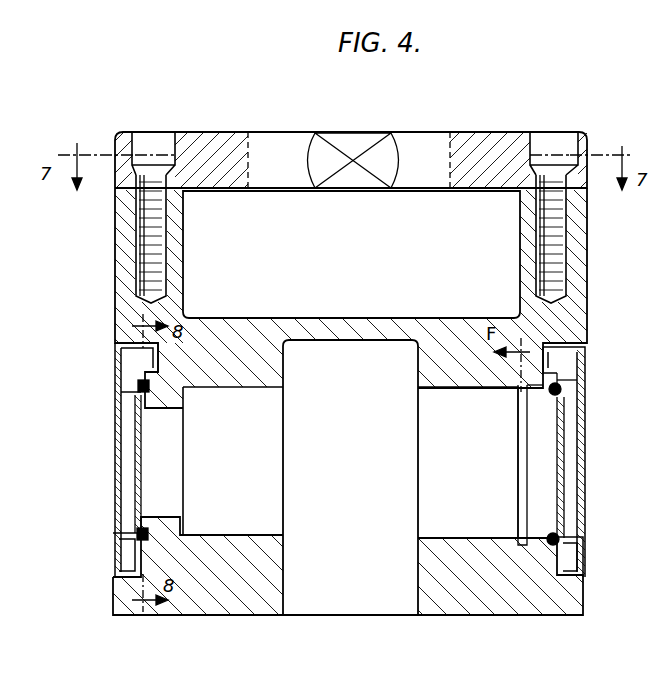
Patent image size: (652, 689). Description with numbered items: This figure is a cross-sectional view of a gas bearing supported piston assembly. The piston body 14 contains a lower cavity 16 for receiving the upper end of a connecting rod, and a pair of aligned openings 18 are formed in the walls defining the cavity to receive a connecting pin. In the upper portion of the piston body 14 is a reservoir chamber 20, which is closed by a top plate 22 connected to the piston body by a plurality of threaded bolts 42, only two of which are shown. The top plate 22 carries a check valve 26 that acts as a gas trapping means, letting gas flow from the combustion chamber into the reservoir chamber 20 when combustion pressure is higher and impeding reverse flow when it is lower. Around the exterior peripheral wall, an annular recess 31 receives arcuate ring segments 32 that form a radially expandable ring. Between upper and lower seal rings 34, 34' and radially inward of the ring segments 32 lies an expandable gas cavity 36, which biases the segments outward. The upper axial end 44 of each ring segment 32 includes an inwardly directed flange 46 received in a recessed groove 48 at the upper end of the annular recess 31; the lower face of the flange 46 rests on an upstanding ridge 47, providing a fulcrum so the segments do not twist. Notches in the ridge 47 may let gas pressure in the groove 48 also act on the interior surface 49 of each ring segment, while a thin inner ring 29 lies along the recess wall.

The piston body 14 is at (594, 240).
The lower cavity 16 is at (350, 477).
The aligned openings 18 is at (268, 436).
The reservoir chamber 20 is at (351, 254).
The top plate 22 is at (509, 132).
The check valve 26 is at (424, 128).
The inner ring 29 is at (138, 428).
The annular recess 31 is at (556, 560).
The arcuate ring segments 32 is at (116, 400).
The seal rings 34 is at (378, 464).
The O-ring seal 34' is at (533, 552).
The expandable gas cavity 36 is at (348, 441).
The threaded bolts 42 is at (163, 142).
The upper axial end 44 is at (566, 345).
The inwardly directed flange 46 is at (516, 386).
The upstanding ridge 47 is at (548, 375).
The recessed groove 48 is at (552, 350).
The interior surface 49 is at (586, 368).